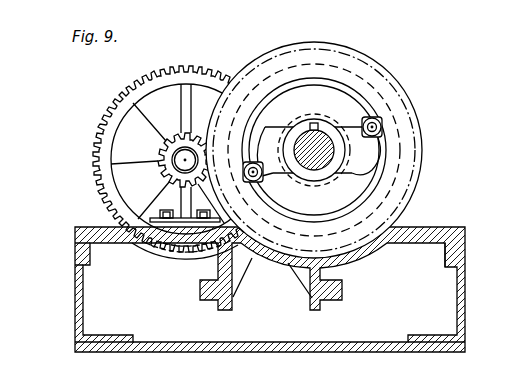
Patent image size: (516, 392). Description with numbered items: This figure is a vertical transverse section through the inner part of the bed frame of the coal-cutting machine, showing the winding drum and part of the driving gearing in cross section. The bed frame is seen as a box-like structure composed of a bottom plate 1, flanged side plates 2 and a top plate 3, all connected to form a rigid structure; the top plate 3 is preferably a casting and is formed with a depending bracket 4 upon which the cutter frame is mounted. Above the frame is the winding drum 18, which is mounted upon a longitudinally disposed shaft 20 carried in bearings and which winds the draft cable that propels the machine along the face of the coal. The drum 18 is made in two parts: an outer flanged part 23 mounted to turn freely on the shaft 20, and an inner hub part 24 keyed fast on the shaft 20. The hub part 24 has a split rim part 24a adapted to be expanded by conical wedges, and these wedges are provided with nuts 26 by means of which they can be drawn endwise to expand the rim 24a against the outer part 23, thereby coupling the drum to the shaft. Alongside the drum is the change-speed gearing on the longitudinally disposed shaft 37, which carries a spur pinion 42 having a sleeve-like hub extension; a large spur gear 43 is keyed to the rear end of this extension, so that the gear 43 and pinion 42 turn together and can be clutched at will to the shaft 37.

The bottom plate 1 is at (301, 349).
The flanged side plates 2 is at (75, 279).
The top plate 3 is at (434, 231).
The front depending bracket 4 is at (311, 297).
The winding drum 18 is at (411, 156).
The shaft 20 is at (318, 130).
The outer flanged part 23 is at (371, 75).
The inner hub part 24 is at (363, 166).
The split rim part 24a is at (330, 168).
The nuts 26 is at (331, 150).
The shaft 37 is at (170, 163).
The spur pinion 42 is at (179, 134).
The spur gear 43 is at (98, 137).